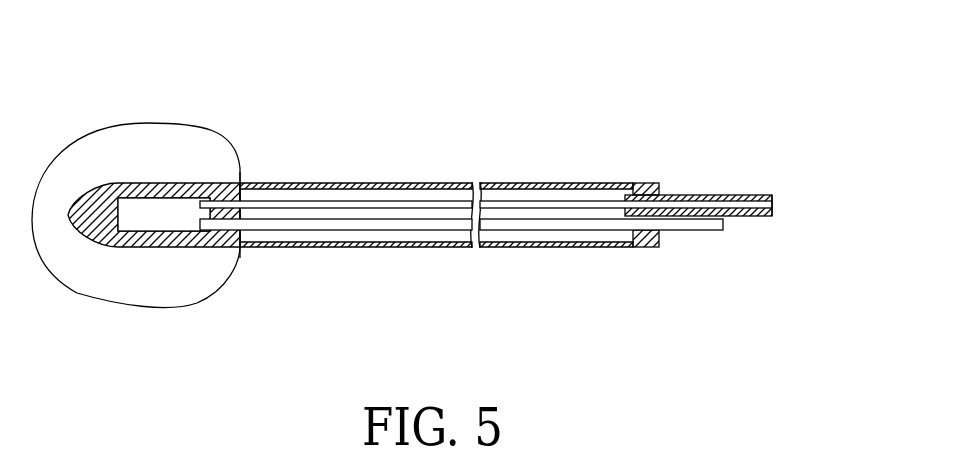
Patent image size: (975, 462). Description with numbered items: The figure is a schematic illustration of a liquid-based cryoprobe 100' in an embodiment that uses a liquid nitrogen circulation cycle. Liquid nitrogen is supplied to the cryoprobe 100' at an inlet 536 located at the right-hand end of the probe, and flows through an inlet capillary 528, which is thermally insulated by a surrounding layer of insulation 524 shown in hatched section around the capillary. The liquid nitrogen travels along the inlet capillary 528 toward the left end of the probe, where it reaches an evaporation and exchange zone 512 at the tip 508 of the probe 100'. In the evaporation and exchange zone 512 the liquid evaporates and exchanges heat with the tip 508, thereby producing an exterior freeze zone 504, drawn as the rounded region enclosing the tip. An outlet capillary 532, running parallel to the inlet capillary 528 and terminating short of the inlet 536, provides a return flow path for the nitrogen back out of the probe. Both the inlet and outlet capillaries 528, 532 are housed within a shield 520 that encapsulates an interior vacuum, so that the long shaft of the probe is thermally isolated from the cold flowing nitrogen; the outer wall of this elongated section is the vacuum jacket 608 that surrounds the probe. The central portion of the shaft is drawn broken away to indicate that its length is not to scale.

The cryoprobe 100' is at (449, 183).
The exterior freeze zone 504 is at (134, 156).
The tip 508 is at (181, 174).
The evaporation and exchange zone 512 is at (159, 214).
The vacuum jacket 608 is at (374, 184).
The shield 520 is at (414, 251).
The insulation 524 is at (697, 191).
The inlet capillary 528 is at (734, 194).
The outlet capillary 532 is at (734, 231).
The inlet 536 is at (774, 202).